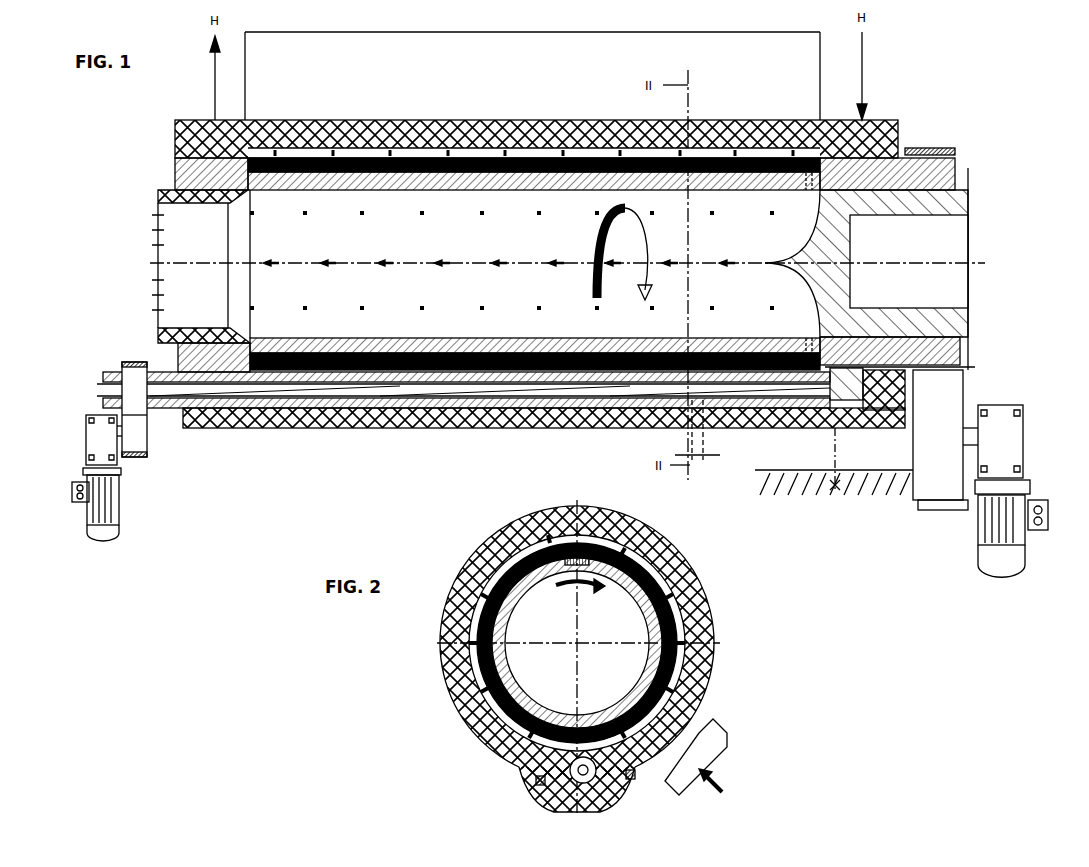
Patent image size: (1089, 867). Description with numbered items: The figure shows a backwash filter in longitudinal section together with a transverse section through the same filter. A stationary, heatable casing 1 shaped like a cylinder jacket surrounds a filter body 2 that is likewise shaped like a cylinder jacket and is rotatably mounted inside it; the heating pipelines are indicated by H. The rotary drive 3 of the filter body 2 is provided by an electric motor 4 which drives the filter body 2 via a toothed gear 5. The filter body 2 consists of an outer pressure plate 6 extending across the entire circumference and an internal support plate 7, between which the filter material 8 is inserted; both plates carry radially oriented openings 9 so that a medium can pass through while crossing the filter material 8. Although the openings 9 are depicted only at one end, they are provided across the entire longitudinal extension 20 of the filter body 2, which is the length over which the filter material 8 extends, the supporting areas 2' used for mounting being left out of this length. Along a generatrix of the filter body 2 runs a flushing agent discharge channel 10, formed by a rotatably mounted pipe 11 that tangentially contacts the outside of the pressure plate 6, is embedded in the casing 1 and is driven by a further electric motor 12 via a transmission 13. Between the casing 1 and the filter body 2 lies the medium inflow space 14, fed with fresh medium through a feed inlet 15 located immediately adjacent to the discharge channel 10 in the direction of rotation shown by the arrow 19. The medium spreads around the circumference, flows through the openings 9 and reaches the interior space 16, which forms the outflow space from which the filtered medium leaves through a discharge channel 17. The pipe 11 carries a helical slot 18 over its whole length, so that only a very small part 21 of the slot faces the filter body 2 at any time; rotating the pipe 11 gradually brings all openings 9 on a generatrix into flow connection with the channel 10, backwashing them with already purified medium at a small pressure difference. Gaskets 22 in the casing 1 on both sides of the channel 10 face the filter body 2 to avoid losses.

In FIG. 1, the casing 1 is at (760, 130).
In FIG. 2, the casing 1 is at (706, 682).
In FIG. 1, the filter body 2 is at (546, 260).
In FIG. 2, the filter body 2 is at (604, 636).
In FIG. 1, the supporting areas 2' is at (512, 109).
In FIG. 1, the rotary drive 3 is at (1030, 488).
In FIG. 1, the electric motor 4 is at (1010, 556).
In FIG. 1, the toothed gear 5 is at (952, 405).
In FIG. 1, the pressure plate 6 is at (712, 165).
In FIG. 2, the pressure plate 6 is at (716, 652).
In FIG. 1, the internal support plate 7 is at (633, 165).
In FIG. 2, the internal support plate 7 is at (668, 700).
In FIG. 1, the filter material 8 is at (598, 168).
In FIG. 2, the filter material 8 is at (458, 685).
In FIG. 1, the openings 9 is at (808, 165).
In FIG. 2, the openings 9 is at (600, 548).
In FIG. 1, the flushing agent discharge channel 10 is at (183, 430).
In FIG. 2, the flushing agent discharge channel 10 is at (578, 800).
In FIG. 1, the pipe 11 is at (756, 420).
In FIG. 2, the pipe 11 is at (557, 790).
In FIG. 1, the electric motor 12 is at (96, 516).
In FIG. 1, the transmission 13 is at (100, 430).
In FIG. 1, the medium inflow space 14 is at (482, 150).
In FIG. 2, the medium inflow space 14 is at (473, 632).
In FIG. 2, the feed inlet 15 is at (700, 757).
In FIG. 1, the interior space 16 is at (470, 270).
In FIG. 2, the interior space 16 is at (556, 650).
In FIG. 1, the discharge channel 17 is at (176, 262).
In FIG. 1, the slot 18 is at (532, 405).
In FIG. 2, the slot 18 is at (600, 785).
In FIG. 1, the arrow 19 is at (650, 270).
In FIG. 2, the arrow 19 is at (566, 590).
In FIG. 1, the longitudinal extension 20 is at (532, 68).
In FIG. 1, the small part 21 is at (703, 430).
In FIG. 2, the gaskets 22 is at (540, 782).